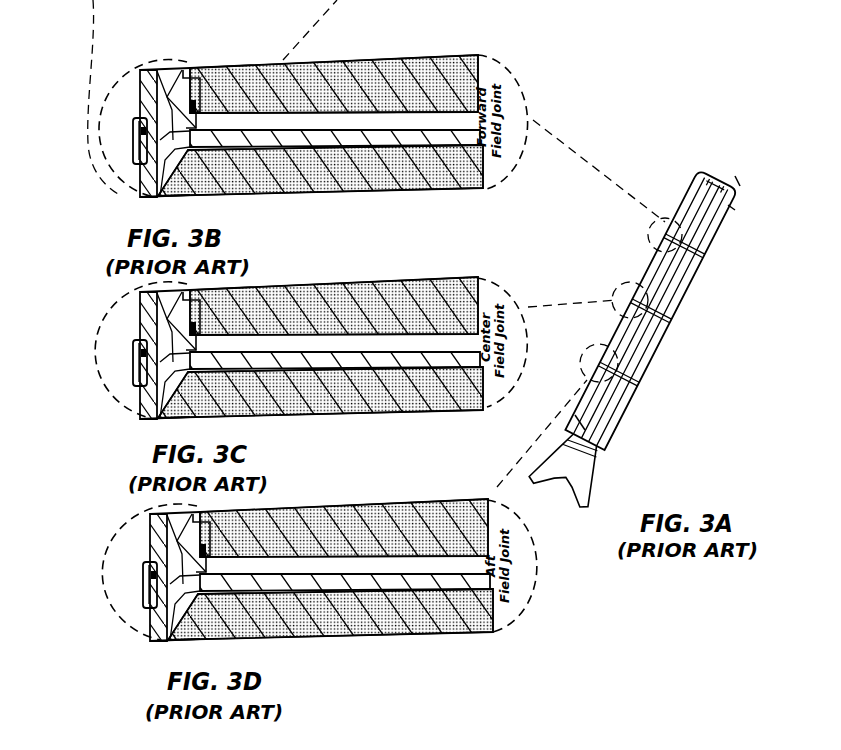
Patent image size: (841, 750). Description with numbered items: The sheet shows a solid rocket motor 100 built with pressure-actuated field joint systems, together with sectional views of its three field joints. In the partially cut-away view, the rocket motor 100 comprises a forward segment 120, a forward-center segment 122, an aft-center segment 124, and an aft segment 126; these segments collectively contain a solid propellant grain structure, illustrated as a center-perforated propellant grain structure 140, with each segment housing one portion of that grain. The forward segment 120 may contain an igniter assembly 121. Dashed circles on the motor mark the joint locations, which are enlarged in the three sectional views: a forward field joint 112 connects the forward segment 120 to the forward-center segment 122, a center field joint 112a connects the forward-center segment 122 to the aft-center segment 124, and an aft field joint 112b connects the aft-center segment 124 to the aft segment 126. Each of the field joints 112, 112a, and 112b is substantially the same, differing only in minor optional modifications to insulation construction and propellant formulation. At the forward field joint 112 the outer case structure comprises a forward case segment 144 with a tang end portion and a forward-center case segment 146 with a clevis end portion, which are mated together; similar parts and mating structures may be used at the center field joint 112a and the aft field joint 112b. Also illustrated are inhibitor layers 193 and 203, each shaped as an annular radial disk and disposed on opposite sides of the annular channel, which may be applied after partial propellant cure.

In FIG. 3A, the rocket motor 100 is at (655, 402).
In FIG. 3B, the forward field joint 112 is at (108, 189).
In FIG. 3C, the center field joint 112a is at (286, 369).
In FIG. 3D, the aft field joint 112b is at (296, 596).
In FIG. 3B, the forward segment 120 is at (250, 112).
In FIG. 3A, the forward segment 120 is at (693, 203).
In FIG. 3A, the igniter assembly 121 is at (730, 205).
In FIG. 3B, the forward-center segment 122 is at (323, 160).
In FIG. 3C, the forward-center segment 122 is at (334, 291).
In FIG. 3A, the forward-center segment 122 is at (690, 295).
In FIG. 3C, the aft-center segment 124 is at (320, 412).
In FIG. 3D, the aft-center segment 124 is at (344, 516).
In FIG. 3A, the aft-center segment 124 is at (653, 347).
In FIG. 3D, the aft segment 126 is at (330, 636).
In FIG. 3A, the aft segment 126 is at (583, 427).
In FIG. 3A, the center-perforated propellant grain structure 140 is at (737, 183).
In FIG. 3B, the forward case segment 144 is at (131, 80).
In FIG. 3B, the forward-center case segment 146 is at (134, 178).
In FIG. 3B, the inhibitor layer 193 is at (245, 116).
In FIG. 3B, the inhibitor layer 203 is at (267, 148).